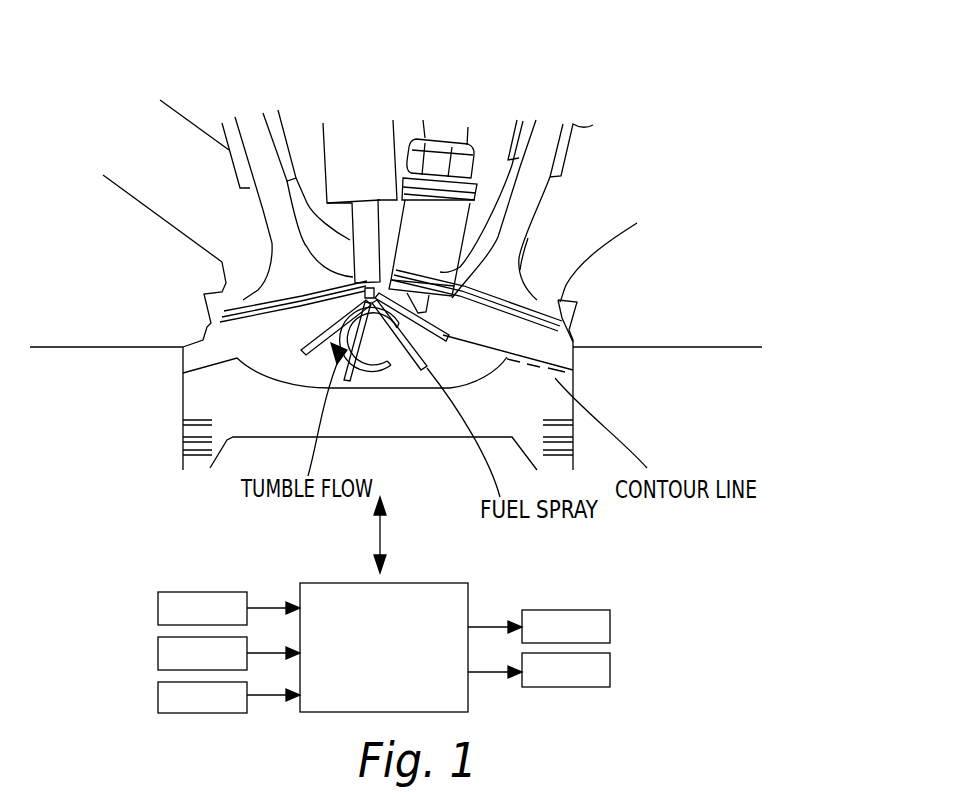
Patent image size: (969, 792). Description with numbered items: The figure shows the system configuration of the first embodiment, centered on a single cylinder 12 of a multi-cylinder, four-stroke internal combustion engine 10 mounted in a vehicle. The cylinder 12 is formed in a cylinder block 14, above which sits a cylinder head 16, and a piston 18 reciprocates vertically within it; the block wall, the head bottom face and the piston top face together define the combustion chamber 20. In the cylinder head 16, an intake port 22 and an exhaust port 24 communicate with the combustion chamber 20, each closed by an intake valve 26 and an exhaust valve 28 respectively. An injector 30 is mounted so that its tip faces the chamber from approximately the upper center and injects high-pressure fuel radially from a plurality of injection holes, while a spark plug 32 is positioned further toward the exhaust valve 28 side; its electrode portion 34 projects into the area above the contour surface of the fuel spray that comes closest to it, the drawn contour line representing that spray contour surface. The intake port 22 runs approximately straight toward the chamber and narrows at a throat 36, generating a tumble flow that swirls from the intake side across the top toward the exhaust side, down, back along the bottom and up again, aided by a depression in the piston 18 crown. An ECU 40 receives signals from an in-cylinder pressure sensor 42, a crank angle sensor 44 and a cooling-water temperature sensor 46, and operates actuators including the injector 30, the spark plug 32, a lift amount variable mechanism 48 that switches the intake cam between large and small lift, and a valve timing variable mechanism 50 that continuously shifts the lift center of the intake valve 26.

The internal combustion engine 10 is at (700, 177).
The cylinder 12 is at (153, 392).
The cylinder block 14 is at (707, 403).
The cylinder head 16 is at (707, 325).
The piston 18 is at (423, 410).
The combustion chamber 20 is at (277, 357).
The intake port 22 is at (218, 192).
The exhaust port 24 is at (603, 217).
The intake valve 26 is at (258, 128).
The exhaust valve 28 is at (543, 128).
The injector 30 is at (358, 122).
The spark plug 32 is at (447, 118).
The electrode portion 34 is at (528, 238).
The throat 36 is at (237, 282).
The ECU 40 is at (333, 583).
The in-cylinder pressure sensor 42 is at (158, 607).
The crank angle sensor 44 is at (158, 652).
The temperature sensor 46 is at (158, 695).
The lift amount variable mechanism 48 is at (610, 621).
The valve timing variable mechanism 50 is at (610, 667).